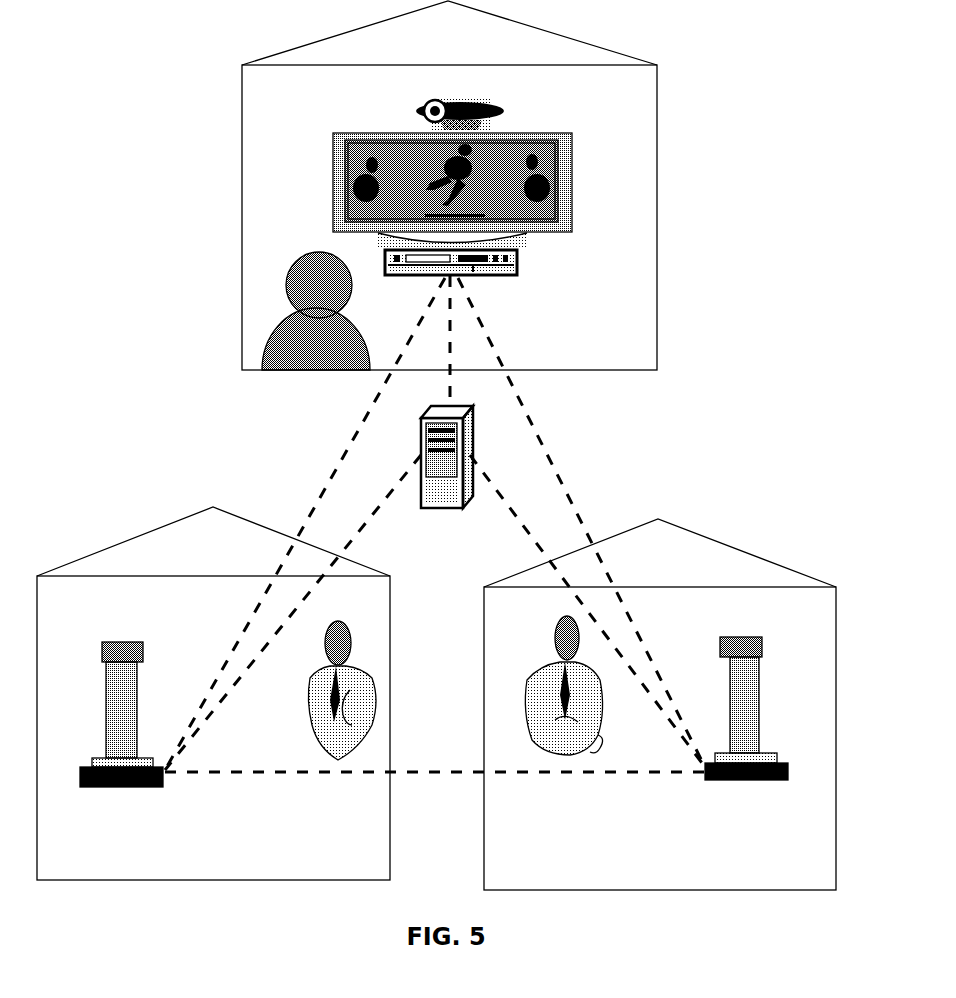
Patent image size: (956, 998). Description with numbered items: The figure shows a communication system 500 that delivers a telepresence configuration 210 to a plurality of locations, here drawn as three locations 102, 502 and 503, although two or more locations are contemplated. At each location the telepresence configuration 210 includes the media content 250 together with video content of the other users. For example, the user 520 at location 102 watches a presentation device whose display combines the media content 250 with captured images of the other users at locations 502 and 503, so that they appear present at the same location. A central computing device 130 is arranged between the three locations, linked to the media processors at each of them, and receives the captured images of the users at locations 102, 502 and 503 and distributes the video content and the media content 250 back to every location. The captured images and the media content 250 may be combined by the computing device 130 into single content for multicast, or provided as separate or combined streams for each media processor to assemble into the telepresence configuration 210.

The communication system 500 is at (436, 458).
The location 102 is at (433, 49).
The telepresence configuration 210 is at (547, 149).
The media content 250 is at (448, 158).
The user 520 is at (312, 268).
The computing device 130 is at (467, 425).
The location 502 is at (199, 555).
The location 503 is at (645, 571).